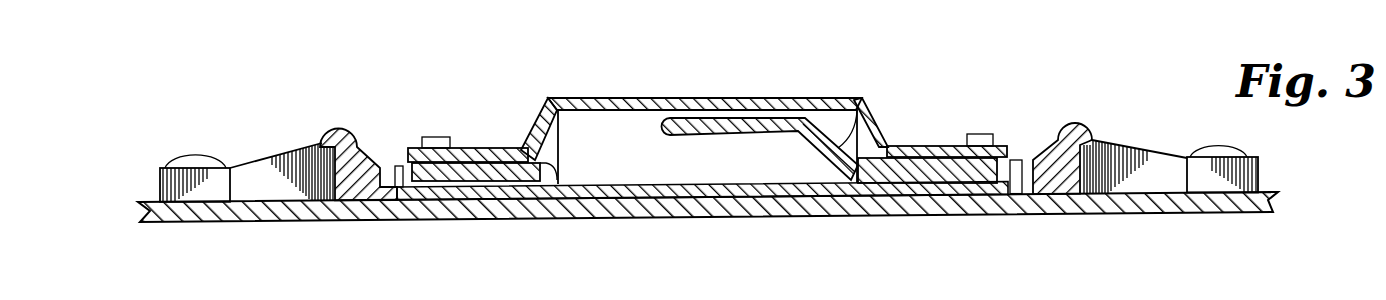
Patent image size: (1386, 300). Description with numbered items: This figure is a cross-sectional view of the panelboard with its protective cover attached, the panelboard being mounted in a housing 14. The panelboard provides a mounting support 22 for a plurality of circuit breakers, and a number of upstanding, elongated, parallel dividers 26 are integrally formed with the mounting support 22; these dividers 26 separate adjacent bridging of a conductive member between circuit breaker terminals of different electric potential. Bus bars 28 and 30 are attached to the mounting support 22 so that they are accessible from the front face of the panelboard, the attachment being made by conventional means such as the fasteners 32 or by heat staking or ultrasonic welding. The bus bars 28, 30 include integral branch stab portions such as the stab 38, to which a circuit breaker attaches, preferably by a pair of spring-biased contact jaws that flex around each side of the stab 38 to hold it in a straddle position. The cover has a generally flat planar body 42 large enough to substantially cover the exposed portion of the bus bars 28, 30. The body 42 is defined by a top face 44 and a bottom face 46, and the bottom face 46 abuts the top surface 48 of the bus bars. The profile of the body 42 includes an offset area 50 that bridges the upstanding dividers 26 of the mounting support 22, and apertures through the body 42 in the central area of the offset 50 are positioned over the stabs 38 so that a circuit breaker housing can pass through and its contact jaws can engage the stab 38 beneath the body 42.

The housing 14 is at (1068, 202).
The mounting support 22 is at (333, 127).
The dividers 26 is at (640, 162).
The bus bar 28 is at (468, 170).
The bus bar 30 is at (927, 168).
The fasteners 32 is at (987, 133).
The branch stab portion 38 is at (739, 118).
The body 42 is at (923, 146).
The top face 44 is at (588, 98).
The bottom face 46 is at (590, 112).
The top surface 48 is at (867, 103).
The offset area 50 is at (795, 100).